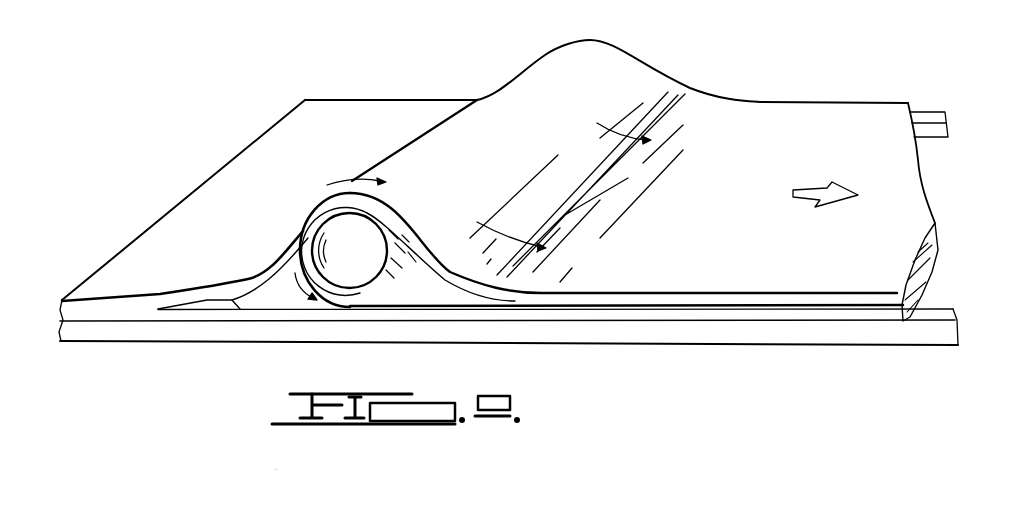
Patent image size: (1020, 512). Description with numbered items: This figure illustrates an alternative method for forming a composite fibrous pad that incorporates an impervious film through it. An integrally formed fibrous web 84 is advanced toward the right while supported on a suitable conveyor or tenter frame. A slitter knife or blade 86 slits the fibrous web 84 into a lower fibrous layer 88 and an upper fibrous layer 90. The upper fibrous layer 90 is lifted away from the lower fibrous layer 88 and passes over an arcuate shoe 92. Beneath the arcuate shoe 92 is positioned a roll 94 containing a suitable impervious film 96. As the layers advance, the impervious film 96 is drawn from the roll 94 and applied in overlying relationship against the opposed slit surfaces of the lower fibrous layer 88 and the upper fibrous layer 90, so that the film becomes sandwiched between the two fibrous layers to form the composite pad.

The fibrous web 84 is at (83, 308).
The slitter knife or blade 86 is at (199, 310).
The lower fibrous layer 88 is at (620, 319).
The upper fibrous layer 90 is at (700, 114).
The arcuate shoe 92 is at (300, 230).
The roll 94 is at (388, 276).
The impervious film 96 is at (447, 311).